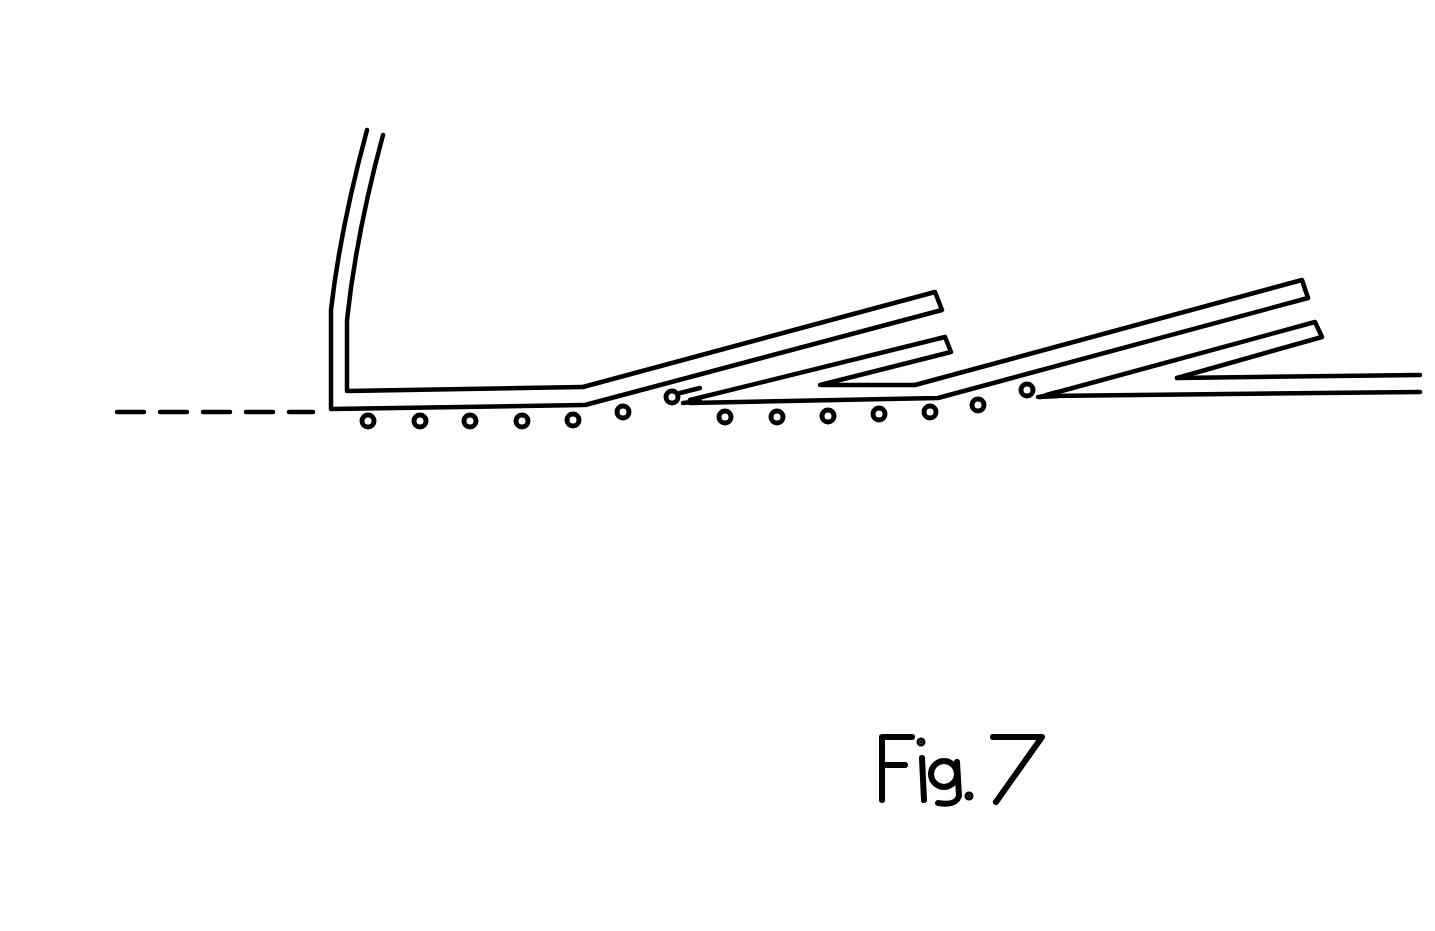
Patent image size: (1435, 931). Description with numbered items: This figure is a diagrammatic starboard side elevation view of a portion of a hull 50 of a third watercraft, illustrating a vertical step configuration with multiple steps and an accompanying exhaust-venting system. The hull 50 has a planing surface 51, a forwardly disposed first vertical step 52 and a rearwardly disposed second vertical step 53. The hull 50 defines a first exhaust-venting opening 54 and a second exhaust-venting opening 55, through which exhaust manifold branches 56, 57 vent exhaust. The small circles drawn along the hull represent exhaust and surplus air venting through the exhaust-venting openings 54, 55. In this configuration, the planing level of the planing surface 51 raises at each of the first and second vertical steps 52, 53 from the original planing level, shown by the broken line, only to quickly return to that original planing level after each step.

The hull 50 is at (360, 153).
The planing surface 51 is at (1360, 418).
The first vertical step 52 is at (1045, 397).
The second vertical step 53 is at (688, 405).
The first exhaust-venting opening 54 is at (1050, 385).
The second exhaust-venting opening 55 is at (692, 390).
The exhaust manifold branch 56 is at (117, 413).
The exhaust manifold branch 57 is at (852, 312).